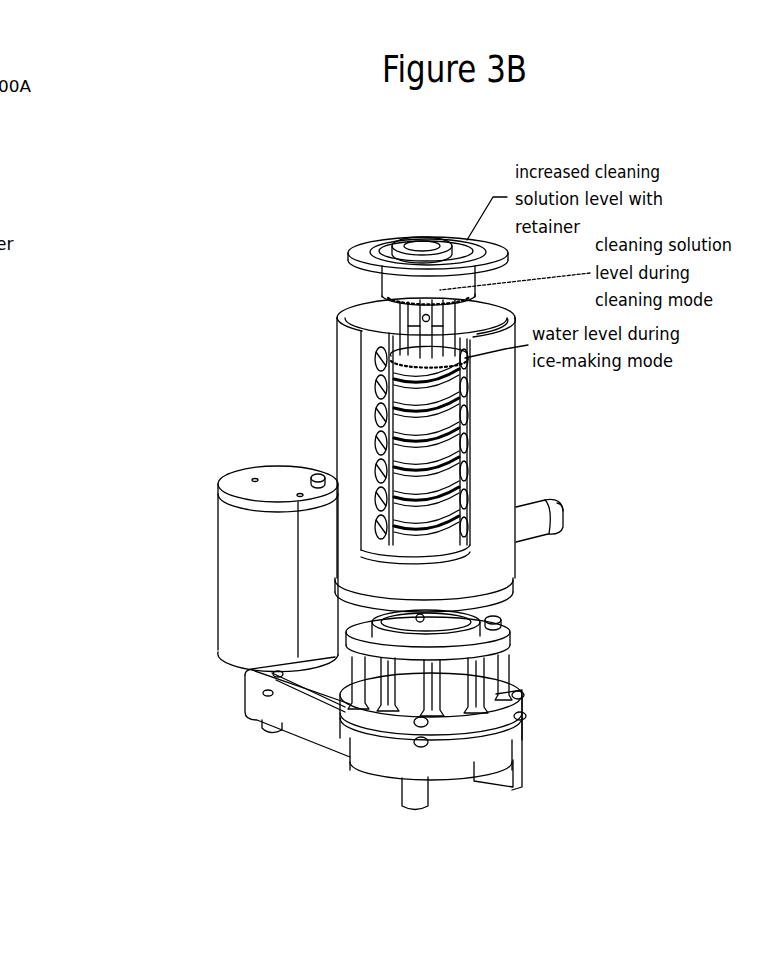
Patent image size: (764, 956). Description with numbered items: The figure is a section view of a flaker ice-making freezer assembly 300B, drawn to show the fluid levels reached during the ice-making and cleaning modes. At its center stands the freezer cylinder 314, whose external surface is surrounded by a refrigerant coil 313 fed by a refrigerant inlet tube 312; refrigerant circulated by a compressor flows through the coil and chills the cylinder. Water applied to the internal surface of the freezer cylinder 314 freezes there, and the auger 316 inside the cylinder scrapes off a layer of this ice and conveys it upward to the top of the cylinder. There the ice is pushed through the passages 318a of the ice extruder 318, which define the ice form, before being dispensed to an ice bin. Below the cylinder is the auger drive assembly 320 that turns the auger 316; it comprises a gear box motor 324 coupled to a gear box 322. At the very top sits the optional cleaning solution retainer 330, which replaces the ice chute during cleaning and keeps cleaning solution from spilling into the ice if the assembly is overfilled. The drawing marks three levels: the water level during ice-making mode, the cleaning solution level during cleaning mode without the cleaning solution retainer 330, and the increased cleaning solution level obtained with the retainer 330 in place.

The freezer assembly 300B is at (592, 134).
The cleaning solution retainer 330 is at (345, 250).
The ice extruder 318 is at (434, 224).
The passages 318a is at (407, 318).
The refrigerant coil 313 is at (377, 427).
The auger 316 is at (450, 466).
The refrigerant inlet tube 312 is at (565, 510).
The freezer cylinder 314 is at (500, 562).
The gear box motor 324 is at (235, 470).
The auger drive assembly 320 is at (222, 796).
The gear box 322 is at (392, 770).